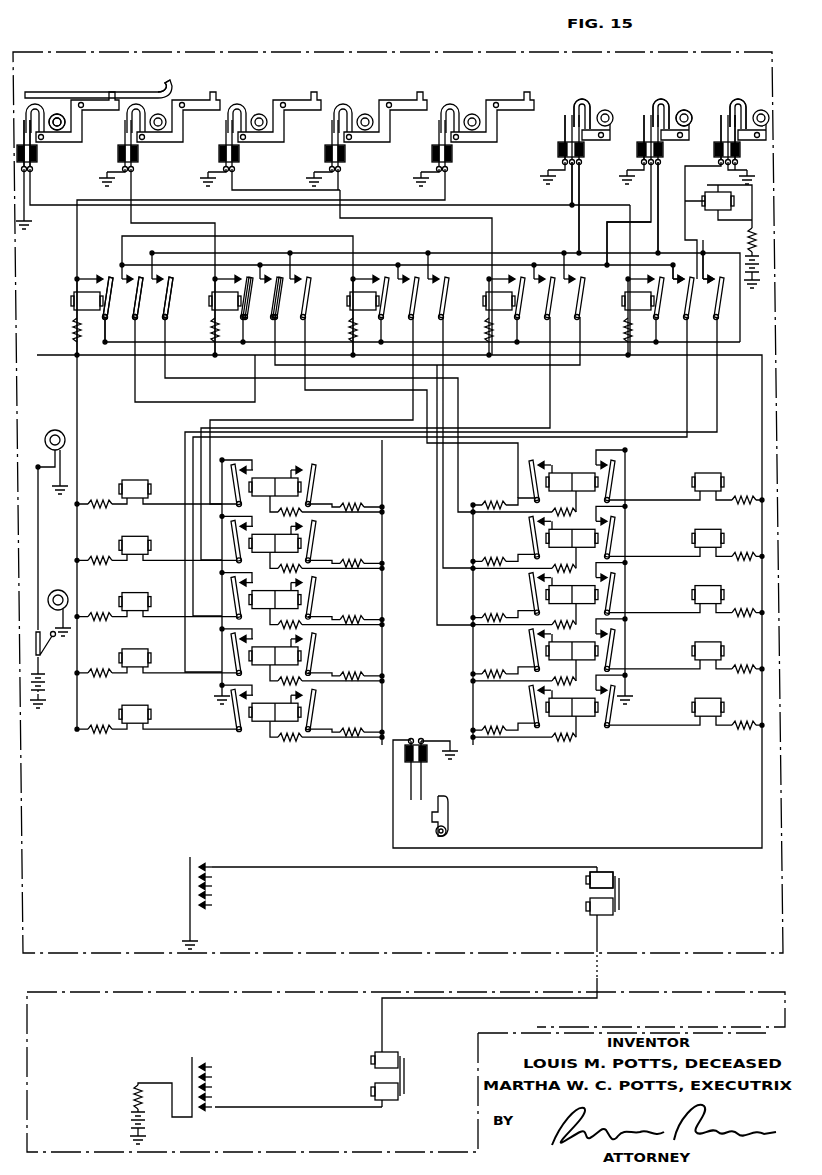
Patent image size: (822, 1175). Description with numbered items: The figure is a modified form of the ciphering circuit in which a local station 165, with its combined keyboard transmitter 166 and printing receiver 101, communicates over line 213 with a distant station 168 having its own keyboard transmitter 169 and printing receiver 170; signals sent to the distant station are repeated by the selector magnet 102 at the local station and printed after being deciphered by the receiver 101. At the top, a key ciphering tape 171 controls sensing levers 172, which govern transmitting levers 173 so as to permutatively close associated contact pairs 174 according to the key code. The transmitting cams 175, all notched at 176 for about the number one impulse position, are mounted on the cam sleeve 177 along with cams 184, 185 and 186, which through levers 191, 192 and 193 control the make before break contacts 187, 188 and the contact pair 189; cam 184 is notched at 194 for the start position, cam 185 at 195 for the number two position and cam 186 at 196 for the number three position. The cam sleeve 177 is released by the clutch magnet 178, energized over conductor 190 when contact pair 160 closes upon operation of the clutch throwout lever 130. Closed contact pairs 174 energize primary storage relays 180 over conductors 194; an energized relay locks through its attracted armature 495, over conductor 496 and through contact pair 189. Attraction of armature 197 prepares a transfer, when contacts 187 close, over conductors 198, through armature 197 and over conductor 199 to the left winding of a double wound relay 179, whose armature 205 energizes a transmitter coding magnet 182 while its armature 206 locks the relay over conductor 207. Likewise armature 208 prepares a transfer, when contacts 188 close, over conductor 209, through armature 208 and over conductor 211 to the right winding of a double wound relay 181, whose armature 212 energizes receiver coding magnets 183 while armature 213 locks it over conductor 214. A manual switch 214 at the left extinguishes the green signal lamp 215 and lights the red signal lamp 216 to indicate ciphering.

The local station 165 is at (365, 58).
The contact pairs 174 is at (24, 96).
The transmitting cams 175 is at (57, 116).
The sensing levers 172 is at (97, 92).
The key ciphering tape 171 is at (162, 88).
The notch 176 is at (63, 124).
The transmitting levers 173 is at (58, 130).
The cam sleeve 177 is at (259, 116).
The conductors 194 is at (68, 182).
The cam 184 is at (603, 113).
The lever 191 is at (584, 101).
The make before break contacts 187 is at (563, 128).
The cam 185 is at (690, 112).
The lever 192 is at (667, 101).
The make before break contacts 188 is at (643, 127).
The notch 195 is at (700, 104).
The notch 196 is at (760, 110).
The lever 193 is at (744, 101).
The contact pair 189 is at (722, 127).
The cam 186 is at (742, 134).
The clutch magnet 178 is at (705, 197).
The conductor 207 is at (570, 204).
The conductors 198 is at (580, 206).
The conductor 209 is at (660, 226).
The conductor 214 is at (604, 240).
The primary storage relays 180 is at (76, 296).
The armature 495 is at (110, 276).
The armature 197 is at (142, 276).
The armature 208 is at (171, 294).
The conductor 496 is at (128, 362).
The conductor 199 is at (135, 394).
The conductor 211 is at (206, 388).
The red signal lamp 216 is at (66, 440).
The green signal lamp 215 is at (66, 594).
The transmitter coding magnets 182 is at (128, 480).
The armature 205 is at (451, 524).
The double wound relays 179 is at (268, 478).
The armature 206 is at (318, 468).
The armature 213 is at (528, 484).
The double wound relays 181 is at (566, 476).
The armature 212 is at (616, 468).
The receiver coding magnets 183 is at (704, 473).
The contact pair 160 is at (425, 788).
The clutch throwout lever 130 is at (443, 822).
The keyboard transmitter 166 is at (195, 864).
The conductor 190 is at (572, 847).
The printing receiver 101 is at (603, 866).
The selector magnet 102 is at (614, 874).
The distant station 168 is at (148, 993).
The keyboard transmitter 169 is at (200, 1061).
The printing receiver 170 is at (393, 1049).